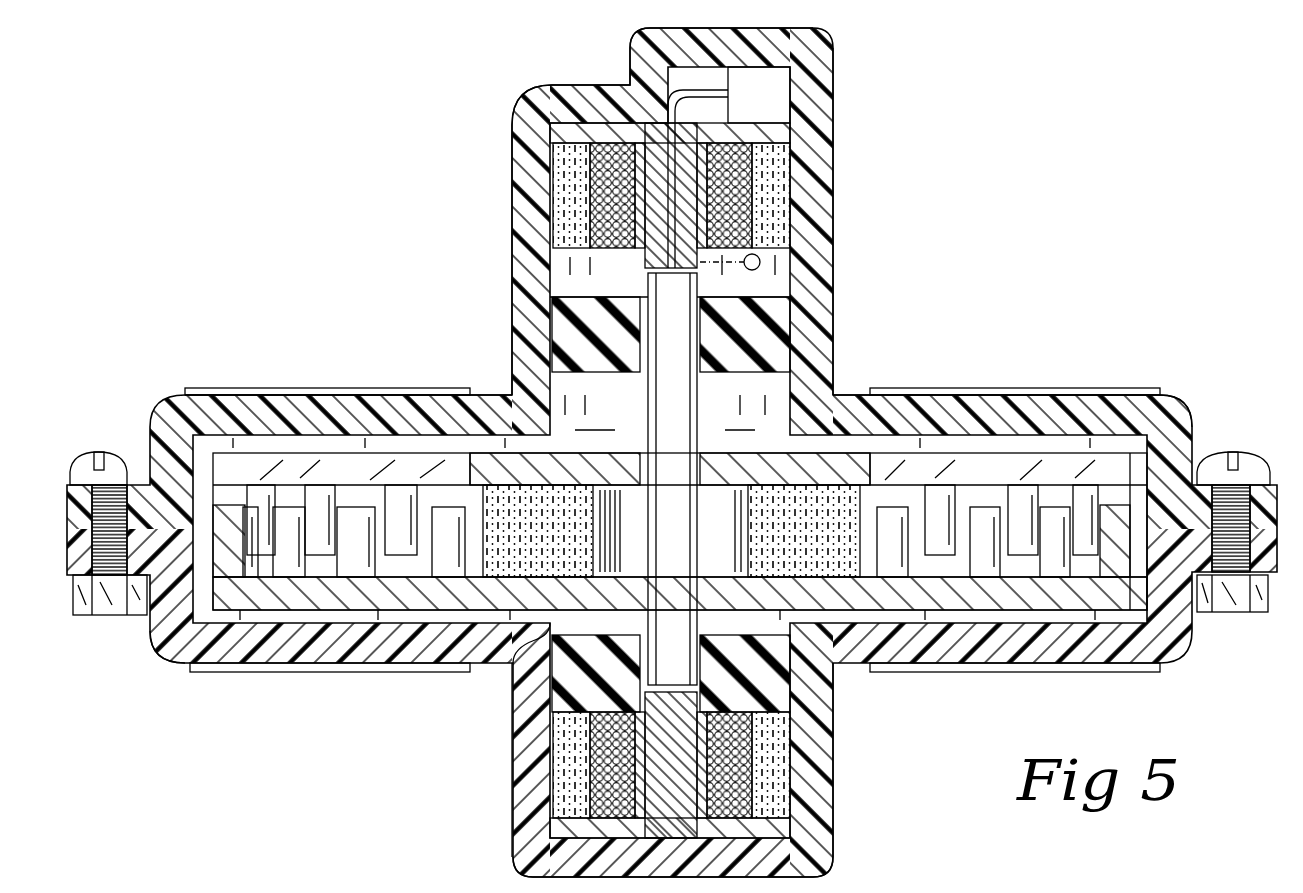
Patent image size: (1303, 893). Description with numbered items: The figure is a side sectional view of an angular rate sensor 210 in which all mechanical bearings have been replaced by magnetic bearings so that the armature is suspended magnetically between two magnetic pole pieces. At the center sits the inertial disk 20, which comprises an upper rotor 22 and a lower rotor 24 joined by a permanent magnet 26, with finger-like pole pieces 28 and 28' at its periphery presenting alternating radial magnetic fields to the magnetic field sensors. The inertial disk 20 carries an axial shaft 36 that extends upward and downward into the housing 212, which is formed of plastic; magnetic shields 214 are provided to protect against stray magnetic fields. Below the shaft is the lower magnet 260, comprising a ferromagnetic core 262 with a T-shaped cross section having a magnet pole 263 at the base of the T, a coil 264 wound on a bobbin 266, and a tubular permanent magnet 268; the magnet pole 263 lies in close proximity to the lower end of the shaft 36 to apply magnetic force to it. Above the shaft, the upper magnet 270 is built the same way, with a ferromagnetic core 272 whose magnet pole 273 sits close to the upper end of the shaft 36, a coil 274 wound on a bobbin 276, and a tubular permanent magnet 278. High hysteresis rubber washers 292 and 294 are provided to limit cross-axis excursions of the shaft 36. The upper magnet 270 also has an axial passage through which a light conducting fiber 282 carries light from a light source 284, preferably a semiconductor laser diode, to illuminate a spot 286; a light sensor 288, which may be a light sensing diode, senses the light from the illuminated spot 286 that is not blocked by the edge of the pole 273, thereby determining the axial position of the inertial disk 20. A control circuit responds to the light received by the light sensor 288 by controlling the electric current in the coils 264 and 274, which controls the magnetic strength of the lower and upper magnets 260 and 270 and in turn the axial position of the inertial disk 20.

The inertial disk 20 is at (1158, 614).
The upper rotor 22 is at (258, 462).
The lower rotor 24 is at (1035, 602).
The permanent magnet 26 is at (515, 562).
The pole pieces 28 is at (660, 541).
The pole pieces 28' is at (656, 617).
The axial shaft 36 is at (645, 290).
The angular rate sensor 210 is at (233, 362).
The housing 212 is at (523, 322).
The magnetic shields 214 is at (1080, 388).
The lower magnet 260 is at (806, 786).
The ferromagnetic core 262 is at (590, 830).
The magnet pole 263 is at (552, 690).
The coil 264 is at (762, 752).
The bobbin 266 is at (705, 703).
The tubular permanent magnet 268 is at (570, 768).
The upper magnet 270 is at (592, 116).
The ferromagnetic core 272 is at (763, 130).
The magnet pole 273 is at (700, 272).
The coil 274 is at (590, 183).
The bobbin 276 is at (568, 150).
The tubular permanent magnet 278 is at (785, 190).
The light conducting fiber 282 is at (676, 100).
The light source 284 is at (759, 95).
The illuminated spot 286 is at (650, 262).
The light sensor 288 is at (760, 258).
The rubber washer 292 is at (516, 675).
The rubber washer 294 is at (760, 366).